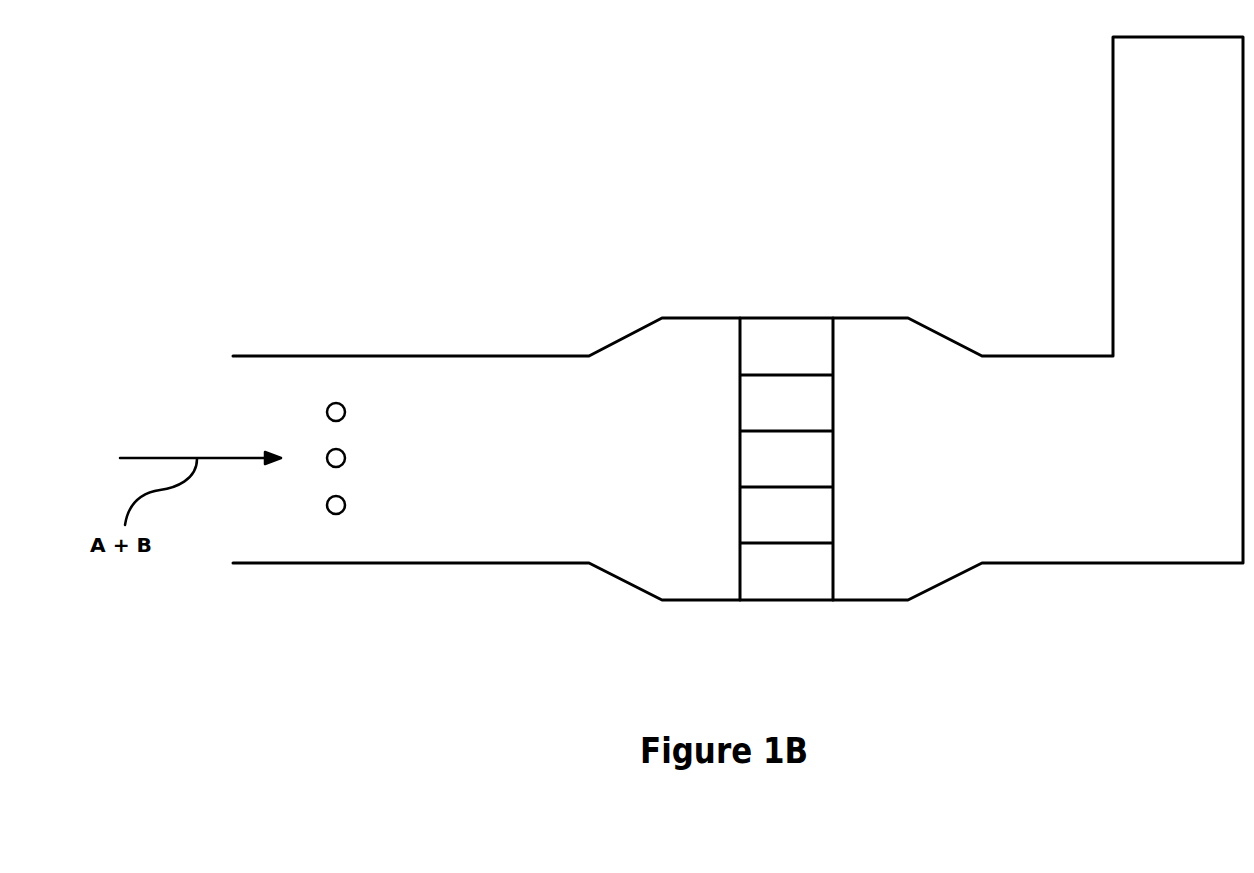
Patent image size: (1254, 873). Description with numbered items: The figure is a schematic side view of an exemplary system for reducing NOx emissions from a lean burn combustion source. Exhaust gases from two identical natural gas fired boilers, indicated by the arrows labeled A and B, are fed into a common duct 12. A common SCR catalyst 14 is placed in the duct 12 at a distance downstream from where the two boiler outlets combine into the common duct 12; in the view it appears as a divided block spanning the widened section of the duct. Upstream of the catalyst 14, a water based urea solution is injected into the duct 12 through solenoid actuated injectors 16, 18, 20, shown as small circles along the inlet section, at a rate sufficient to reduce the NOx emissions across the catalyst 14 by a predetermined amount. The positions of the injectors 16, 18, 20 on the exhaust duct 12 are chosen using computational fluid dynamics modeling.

The common duct 12 is at (603, 461).
The common SCR catalyst 14 is at (787, 327).
The solenoid actuated injector 16 is at (345, 411).
The solenoid actuated injector 18 is at (345, 457).
The solenoid actuated injector 20 is at (345, 504).